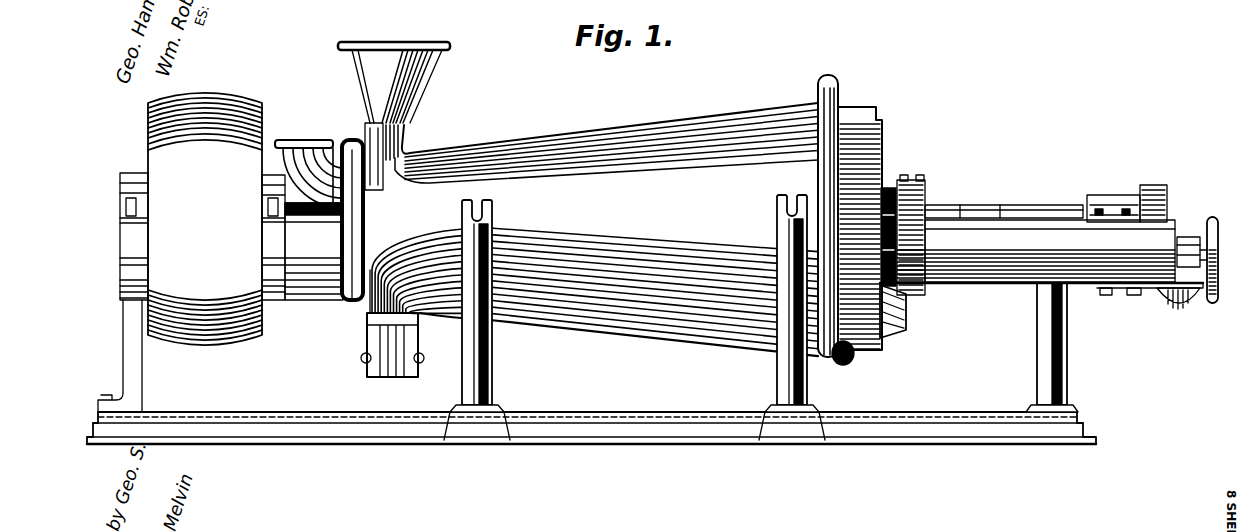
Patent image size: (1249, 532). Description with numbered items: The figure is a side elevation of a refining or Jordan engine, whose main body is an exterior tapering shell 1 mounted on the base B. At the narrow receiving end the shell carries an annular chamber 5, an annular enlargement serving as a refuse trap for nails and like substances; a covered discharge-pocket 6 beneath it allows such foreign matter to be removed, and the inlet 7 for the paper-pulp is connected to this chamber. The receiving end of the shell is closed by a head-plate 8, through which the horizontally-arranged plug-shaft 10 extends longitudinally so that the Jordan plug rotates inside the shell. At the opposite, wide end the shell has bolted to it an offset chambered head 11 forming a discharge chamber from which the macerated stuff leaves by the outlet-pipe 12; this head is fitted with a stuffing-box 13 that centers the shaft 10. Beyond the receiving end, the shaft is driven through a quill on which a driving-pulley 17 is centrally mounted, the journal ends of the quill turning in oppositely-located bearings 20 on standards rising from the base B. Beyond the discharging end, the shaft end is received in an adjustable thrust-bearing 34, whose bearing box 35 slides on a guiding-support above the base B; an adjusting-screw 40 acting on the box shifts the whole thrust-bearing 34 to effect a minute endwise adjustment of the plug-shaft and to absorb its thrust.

The exterior tapering shell 1 is at (595, 229).
The annular chamber 5 is at (447, 143).
The discharge-pocket 6 is at (420, 352).
The inlet 7 is at (362, 78).
The head-plate 8 is at (350, 302).
The plug-shaft 10 is at (970, 206).
The offset chambered head 11 is at (874, 107).
The outlet-pipe 12 is at (906, 314).
The stuffing-box 13 is at (899, 187).
The driving-pulley 17 is at (205, 219).
The bearings 20 is at (134, 173).
The adjustable thrust-bearing 34 is at (1120, 195).
The bearing box 35 is at (1041, 264).
The adjusting-screw 40 is at (1210, 237).
The base B is at (655, 412).